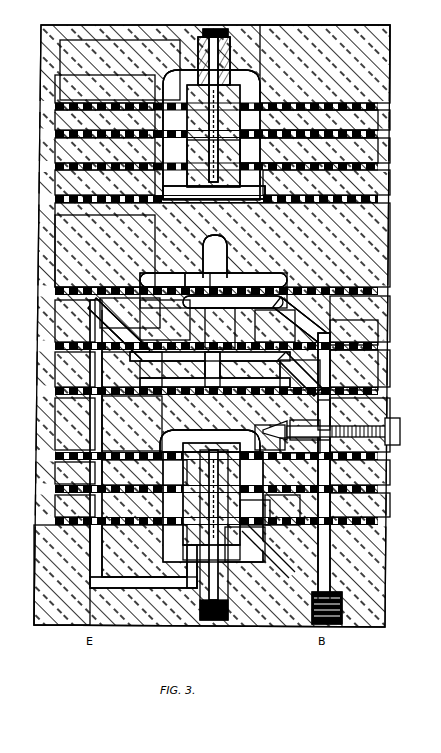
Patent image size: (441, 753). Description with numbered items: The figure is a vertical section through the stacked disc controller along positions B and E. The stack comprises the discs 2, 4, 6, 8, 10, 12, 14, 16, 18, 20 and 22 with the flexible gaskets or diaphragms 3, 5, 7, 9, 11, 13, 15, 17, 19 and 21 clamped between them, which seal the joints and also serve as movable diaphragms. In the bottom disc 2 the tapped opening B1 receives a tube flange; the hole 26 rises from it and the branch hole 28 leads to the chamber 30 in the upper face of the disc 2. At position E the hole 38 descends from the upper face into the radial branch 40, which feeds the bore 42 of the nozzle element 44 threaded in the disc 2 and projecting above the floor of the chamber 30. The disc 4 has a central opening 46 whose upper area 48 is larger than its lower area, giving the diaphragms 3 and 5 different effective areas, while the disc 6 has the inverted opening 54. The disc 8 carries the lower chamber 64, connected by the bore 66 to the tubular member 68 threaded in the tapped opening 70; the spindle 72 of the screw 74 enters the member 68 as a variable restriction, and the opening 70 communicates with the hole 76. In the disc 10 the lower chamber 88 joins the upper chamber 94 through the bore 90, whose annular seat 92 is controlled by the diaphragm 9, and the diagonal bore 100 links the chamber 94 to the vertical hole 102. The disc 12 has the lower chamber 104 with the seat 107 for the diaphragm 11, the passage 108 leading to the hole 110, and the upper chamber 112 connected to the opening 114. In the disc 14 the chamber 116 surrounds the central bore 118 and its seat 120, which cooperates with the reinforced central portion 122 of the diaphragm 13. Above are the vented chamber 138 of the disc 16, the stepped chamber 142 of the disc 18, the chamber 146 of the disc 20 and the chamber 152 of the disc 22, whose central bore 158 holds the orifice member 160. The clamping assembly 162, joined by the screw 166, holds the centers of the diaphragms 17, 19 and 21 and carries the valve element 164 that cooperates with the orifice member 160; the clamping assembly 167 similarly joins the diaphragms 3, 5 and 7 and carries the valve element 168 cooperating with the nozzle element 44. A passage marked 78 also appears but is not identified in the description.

The disc 2 is at (388, 580).
The gasket 3 is at (80, 516).
The disc 4 is at (388, 523).
The gasket 5 is at (80, 488).
The disc 6 is at (388, 490).
The gasket 7 is at (80, 452).
The disc 8 is at (388, 463).
The diaphragm 9 is at (82, 388).
The disc 10 is at (388, 383).
The diaphragm 11 is at (80, 342).
The disc 12 is at (388, 330).
The diaphragm 13 is at (82, 287).
The disc 14 is at (388, 250).
The gasket 15 is at (100, 194).
The disc 16 is at (390, 203).
The diaphragm 17 is at (100, 160).
The disc 18 is at (390, 165).
The diaphragm 19 is at (100, 130).
The disc 20 is at (390, 130).
The diaphragm 21 is at (98, 103).
The disc 22 is at (390, 72).
The hole 26 is at (330, 548).
The branch hole 28 is at (295, 556).
The chamber 30 is at (240, 548).
The hole 38 is at (88, 563).
The branch 40 is at (138, 580).
The interior bore 42 is at (196, 560).
The nozzle element 44 is at (228, 606).
The central opening 46 is at (250, 519).
The upper area 48 is at (282, 522).
The central opening 54 is at (160, 468).
The chamber 64 is at (238, 432).
The bore 66 is at (270, 433).
The tubular member 68 is at (316, 420).
The tapped opening 70 is at (282, 441).
The spindle 72 is at (326, 431).
The screw 74 is at (398, 428).
The hole 76 is at (338, 388).
The passage 78 is at (150, 398).
The chamber 88 is at (272, 384).
The bore 90 is at (215, 372).
The annular seat 92 is at (192, 375).
The chamber 94 is at (142, 378).
The diagonal bore 100 is at (315, 345).
The vertical hole 102 is at (330, 348).
The chamber 104 is at (268, 338).
The seat 107 is at (218, 334).
The passage 108 is at (148, 316).
The hole 110 is at (88, 318).
The chamber 112 is at (175, 330).
The opening 114 is at (312, 322).
The chamber 116 is at (272, 276).
The central bore 118 is at (222, 266).
The seat 120 is at (200, 274).
The reinforced central portion 122 is at (160, 268).
The central opening 138 is at (245, 199).
The opening 142 is at (270, 146).
The central opening 146 is at (270, 122).
The chamber 152 is at (255, 100).
The central bore 158 is at (220, 35).
The orifice member 160 is at (205, 29).
The clamping assembly 162 is at (172, 84).
The valve element 164 is at (232, 75).
The screw 166 is at (200, 158).
The clamping assembly 167 is at (175, 535).
The valve element 168 is at (240, 578).
The tapped opening B1 is at (340, 610).